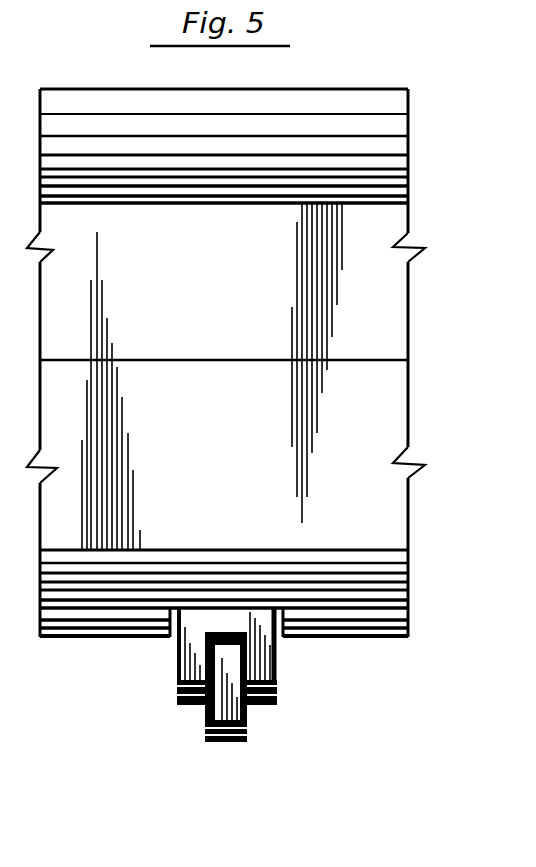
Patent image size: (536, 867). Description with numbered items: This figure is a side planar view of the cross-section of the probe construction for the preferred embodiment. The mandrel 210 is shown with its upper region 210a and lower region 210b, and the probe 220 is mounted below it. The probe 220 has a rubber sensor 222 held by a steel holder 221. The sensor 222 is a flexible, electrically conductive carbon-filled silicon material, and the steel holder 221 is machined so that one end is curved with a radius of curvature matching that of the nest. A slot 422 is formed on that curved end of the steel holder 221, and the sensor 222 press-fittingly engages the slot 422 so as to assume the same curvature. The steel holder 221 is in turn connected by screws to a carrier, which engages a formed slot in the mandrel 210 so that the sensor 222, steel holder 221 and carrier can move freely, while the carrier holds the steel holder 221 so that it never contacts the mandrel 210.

The mandrel 210 is at (452, 319).
The upper chamber 210a is at (232, 285).
The lower chamber 210b is at (232, 472).
The probe 220 is at (175, 733).
The steel holder 221 is at (177, 655).
The sensor 222 is at (223, 741).
The slot 422 is at (250, 663).